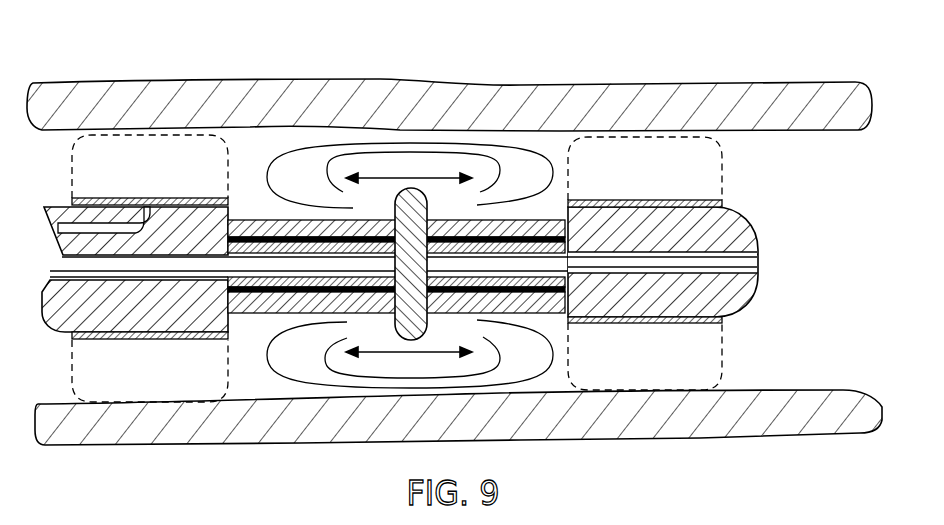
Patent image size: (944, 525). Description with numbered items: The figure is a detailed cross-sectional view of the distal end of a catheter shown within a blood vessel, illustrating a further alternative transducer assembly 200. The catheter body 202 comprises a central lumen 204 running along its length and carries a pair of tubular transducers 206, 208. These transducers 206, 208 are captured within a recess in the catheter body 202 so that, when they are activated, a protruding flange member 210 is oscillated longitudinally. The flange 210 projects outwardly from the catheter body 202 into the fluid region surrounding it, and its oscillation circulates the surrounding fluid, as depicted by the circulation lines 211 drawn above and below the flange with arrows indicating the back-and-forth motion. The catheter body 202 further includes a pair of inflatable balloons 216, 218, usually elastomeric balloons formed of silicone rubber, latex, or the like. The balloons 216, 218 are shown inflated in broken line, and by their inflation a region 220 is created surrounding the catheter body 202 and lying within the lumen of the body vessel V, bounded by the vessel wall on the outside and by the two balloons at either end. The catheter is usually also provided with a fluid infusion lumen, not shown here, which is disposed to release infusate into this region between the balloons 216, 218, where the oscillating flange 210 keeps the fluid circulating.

The body vessel V is at (608, 103).
The transducer assembly 200 is at (433, 270).
The catheter body 202 is at (55, 333).
The central lumen 204 is at (54, 262).
The tubular transducer 206 is at (257, 304).
The tubular transducer 208 is at (556, 316).
The protruding flange member 210 is at (443, 268).
The circulation lines 211 is at (493, 151).
The inflatable balloon 216 is at (167, 198).
The inflatable balloon 218 is at (721, 324).
The region 220 is at (271, 146).